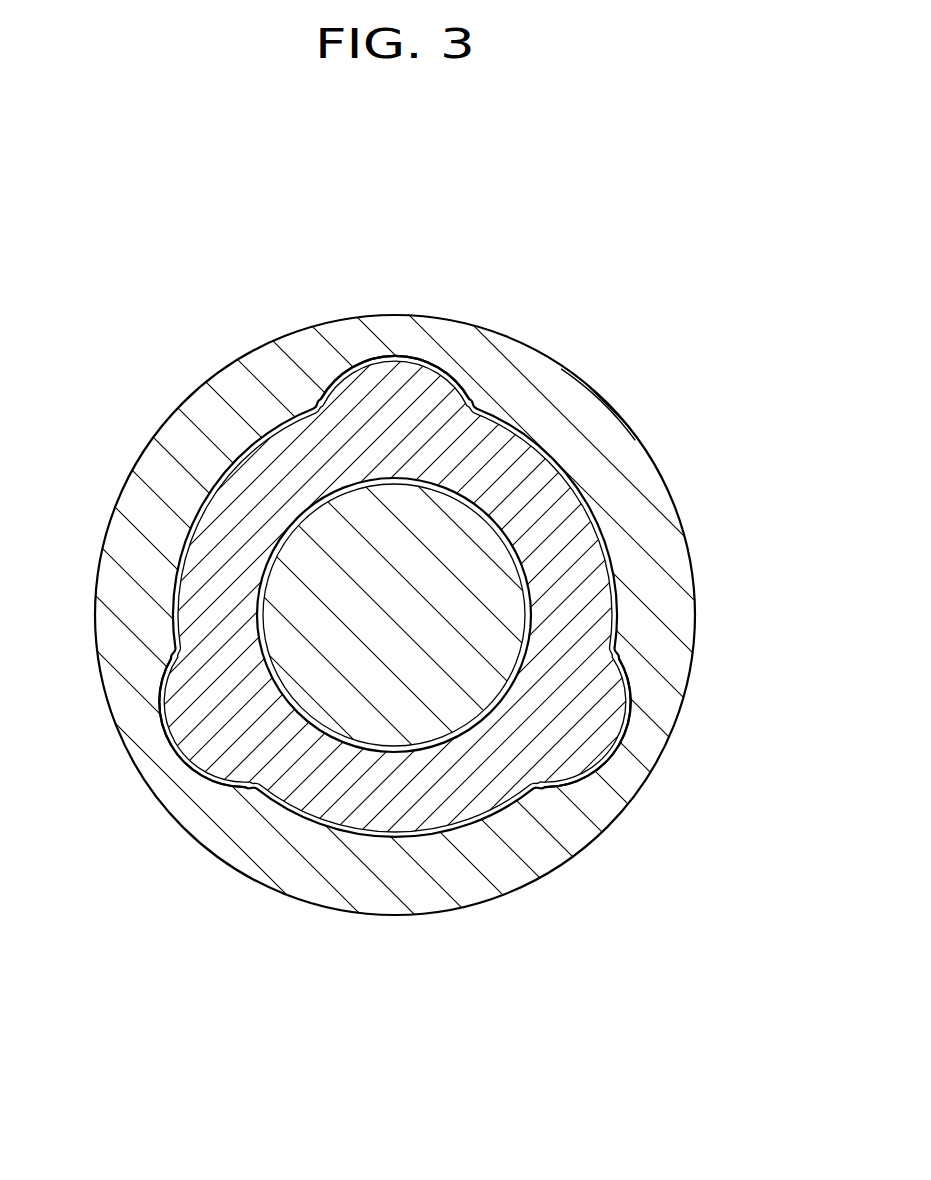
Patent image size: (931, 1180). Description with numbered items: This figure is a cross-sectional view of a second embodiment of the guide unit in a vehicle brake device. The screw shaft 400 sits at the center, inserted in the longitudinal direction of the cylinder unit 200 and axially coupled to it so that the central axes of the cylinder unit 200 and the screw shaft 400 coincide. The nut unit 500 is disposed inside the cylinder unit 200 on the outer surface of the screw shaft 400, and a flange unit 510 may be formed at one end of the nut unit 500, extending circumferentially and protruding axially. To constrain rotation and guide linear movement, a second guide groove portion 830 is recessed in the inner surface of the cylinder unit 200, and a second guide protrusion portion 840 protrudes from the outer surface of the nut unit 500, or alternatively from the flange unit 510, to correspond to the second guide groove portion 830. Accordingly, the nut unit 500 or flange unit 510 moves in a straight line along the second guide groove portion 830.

The cylinder unit 200 is at (540, 349).
The screw shaft 400 is at (325, 582).
The nut unit 500 is at (465, 653).
The flange unit 510 is at (395, 683).
The second guide groove portion 830 is at (472, 571).
The second guide protrusion portion 840 is at (596, 740).